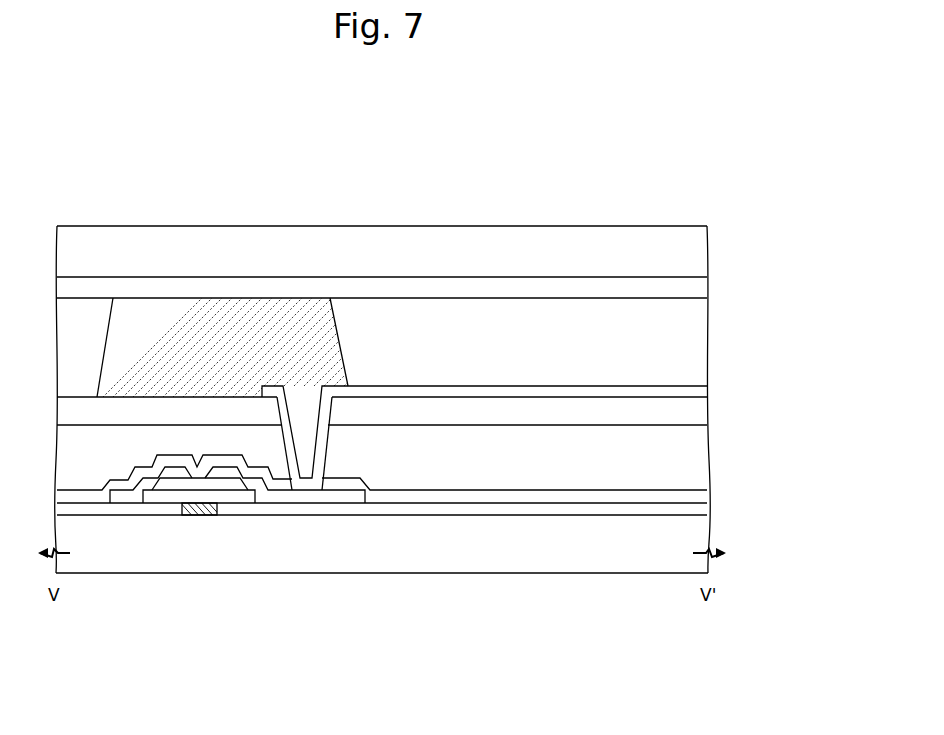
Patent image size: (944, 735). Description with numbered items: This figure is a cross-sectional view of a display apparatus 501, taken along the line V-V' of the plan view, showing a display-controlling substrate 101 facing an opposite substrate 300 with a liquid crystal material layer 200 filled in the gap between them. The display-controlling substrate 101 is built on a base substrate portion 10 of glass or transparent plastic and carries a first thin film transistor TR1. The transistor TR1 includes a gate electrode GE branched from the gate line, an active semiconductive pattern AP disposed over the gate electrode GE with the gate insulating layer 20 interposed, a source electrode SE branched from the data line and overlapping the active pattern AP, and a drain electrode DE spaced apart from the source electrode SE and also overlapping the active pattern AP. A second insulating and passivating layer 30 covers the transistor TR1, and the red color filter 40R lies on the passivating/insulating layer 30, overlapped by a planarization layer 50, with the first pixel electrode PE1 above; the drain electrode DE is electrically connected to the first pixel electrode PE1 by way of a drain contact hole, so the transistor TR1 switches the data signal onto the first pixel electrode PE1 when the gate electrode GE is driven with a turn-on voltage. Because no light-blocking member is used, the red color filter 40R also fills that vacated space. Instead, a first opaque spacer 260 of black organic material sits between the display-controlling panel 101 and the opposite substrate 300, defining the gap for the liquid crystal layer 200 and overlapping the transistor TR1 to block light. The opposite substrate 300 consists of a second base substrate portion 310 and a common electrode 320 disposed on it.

The display apparatus 501 is at (701, 176).
The second base substrate portion 310 is at (697, 250).
The common electrode 320 is at (697, 290).
The opposite substrate 300 is at (437, 265).
The liquid crystal material layer 200 is at (697, 341).
The first opaque spacer 260 is at (333, 337).
The first pixel electrode PE1 is at (697, 389).
The planarization layer 50 is at (697, 411).
The red color filter 40R is at (697, 461).
The display-controlling substrate 101 is at (437, 510).
The passivating/insulating layer 30 is at (697, 496).
The gate insulating layer 20 is at (697, 506).
The base substrate portion 10 is at (410, 530).
The source electrode SE is at (128, 495).
The active semiconductive pattern AP is at (158, 497).
The gate electrode GE is at (197, 505).
The drain electrode DE is at (267, 497).
The first thin film transistor TR1 is at (237, 567).